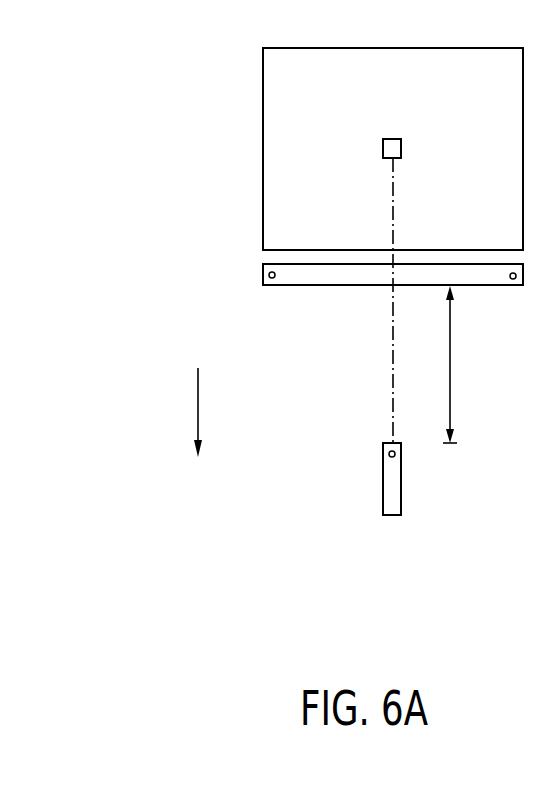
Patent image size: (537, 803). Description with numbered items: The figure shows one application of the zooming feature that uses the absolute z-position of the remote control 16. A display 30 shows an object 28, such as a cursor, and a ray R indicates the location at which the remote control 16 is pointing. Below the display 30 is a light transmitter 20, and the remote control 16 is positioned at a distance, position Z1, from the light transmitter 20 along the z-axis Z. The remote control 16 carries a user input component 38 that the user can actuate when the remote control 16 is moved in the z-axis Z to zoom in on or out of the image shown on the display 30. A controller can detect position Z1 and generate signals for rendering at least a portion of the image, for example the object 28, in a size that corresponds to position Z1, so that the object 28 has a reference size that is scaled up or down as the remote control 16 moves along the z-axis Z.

The display 30 is at (272, 133).
The object 28 is at (402, 150).
The ray R is at (395, 205).
The light transmitter 20 is at (290, 287).
The position Z1 is at (452, 366).
The z-axis Z is at (198, 408).
The remote control 16 is at (395, 484).
The user input component 38 is at (389, 453).